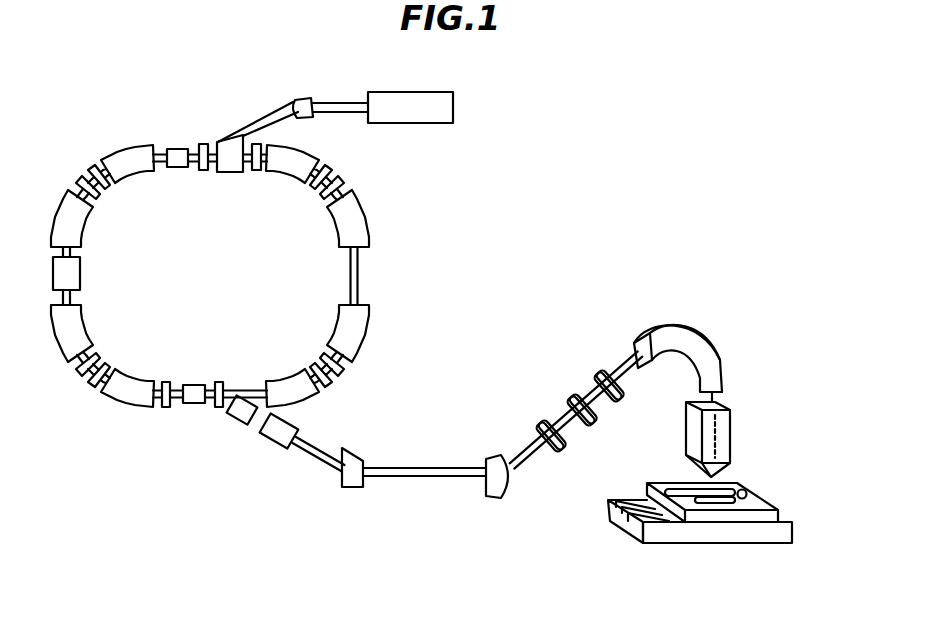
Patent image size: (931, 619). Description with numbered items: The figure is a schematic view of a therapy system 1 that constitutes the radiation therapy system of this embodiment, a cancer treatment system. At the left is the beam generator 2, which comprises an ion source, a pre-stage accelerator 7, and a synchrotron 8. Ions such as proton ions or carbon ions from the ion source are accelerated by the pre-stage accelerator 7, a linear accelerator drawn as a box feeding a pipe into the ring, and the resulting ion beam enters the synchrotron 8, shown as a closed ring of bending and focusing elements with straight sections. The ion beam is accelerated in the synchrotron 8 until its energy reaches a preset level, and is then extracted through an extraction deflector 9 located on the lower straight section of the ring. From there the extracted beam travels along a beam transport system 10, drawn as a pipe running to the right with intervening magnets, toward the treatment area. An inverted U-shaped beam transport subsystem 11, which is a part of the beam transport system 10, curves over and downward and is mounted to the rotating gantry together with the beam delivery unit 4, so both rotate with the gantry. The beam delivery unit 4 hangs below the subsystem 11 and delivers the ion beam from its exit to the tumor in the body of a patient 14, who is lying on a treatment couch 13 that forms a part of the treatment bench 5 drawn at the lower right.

The therapy system 1 is at (317, 471).
The beam generator 2 is at (370, 277).
The beam delivery unit 4 is at (733, 432).
The treatment bench 5 is at (710, 535).
The pre-stage accelerator 7 is at (455, 110).
The synchrotron 8 is at (67, 346).
The extraction deflector 9 is at (233, 426).
The beam transport system 10 is at (424, 480).
The beam transport subsystem 11 is at (624, 362).
The treatment couch 13 is at (756, 504).
The patient 14 is at (733, 483).